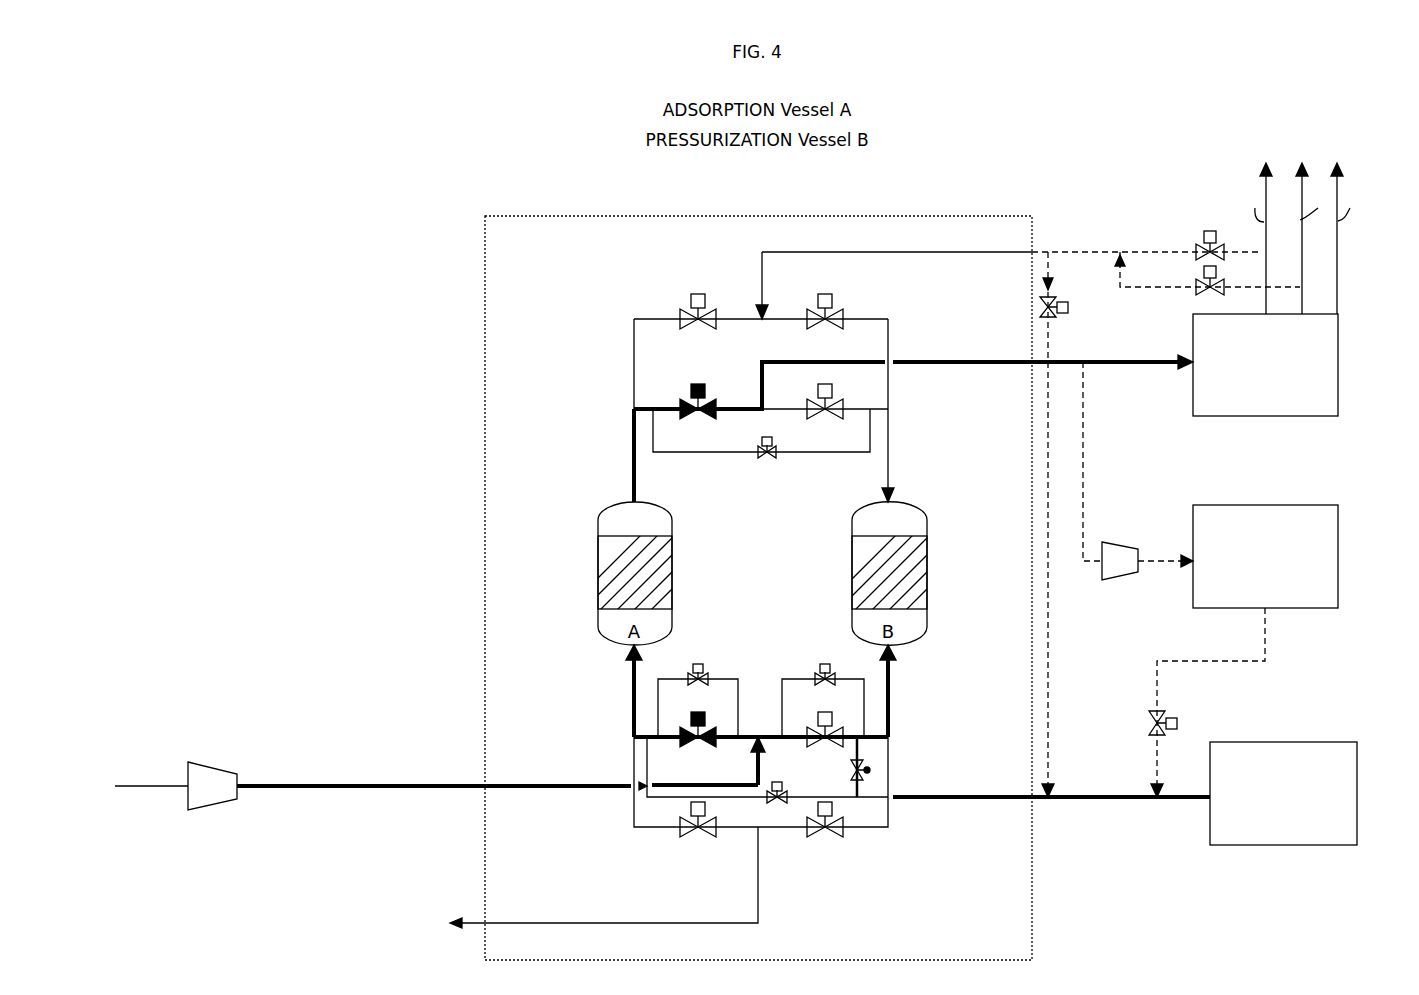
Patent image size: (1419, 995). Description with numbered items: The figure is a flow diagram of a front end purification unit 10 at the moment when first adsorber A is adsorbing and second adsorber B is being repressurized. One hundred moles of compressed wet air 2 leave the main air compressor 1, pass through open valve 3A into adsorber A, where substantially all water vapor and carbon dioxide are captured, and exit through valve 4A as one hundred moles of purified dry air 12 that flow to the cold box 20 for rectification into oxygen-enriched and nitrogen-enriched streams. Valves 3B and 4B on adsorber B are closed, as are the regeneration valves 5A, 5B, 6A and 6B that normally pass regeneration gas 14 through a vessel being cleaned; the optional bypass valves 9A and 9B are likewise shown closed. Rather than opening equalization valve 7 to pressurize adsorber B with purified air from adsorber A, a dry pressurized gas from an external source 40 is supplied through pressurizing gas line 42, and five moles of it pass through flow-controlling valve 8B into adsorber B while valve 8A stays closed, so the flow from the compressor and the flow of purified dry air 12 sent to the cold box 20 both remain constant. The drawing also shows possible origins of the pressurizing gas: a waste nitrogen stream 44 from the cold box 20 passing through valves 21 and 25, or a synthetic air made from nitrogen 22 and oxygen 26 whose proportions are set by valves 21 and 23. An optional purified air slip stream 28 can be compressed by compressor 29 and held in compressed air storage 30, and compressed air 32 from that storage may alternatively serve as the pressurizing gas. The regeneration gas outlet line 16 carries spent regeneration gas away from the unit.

The main air compressor 1 is at (212, 763).
The compressed wet air 2 is at (568, 788).
The valve 3A is at (698, 710).
The valve 3B is at (828, 711).
The valve 4A is at (696, 386).
The valve 4B is at (828, 390).
The valve 5A is at (696, 296).
The valve 5B is at (828, 295).
The valve 6A is at (703, 810).
The valve 6B is at (831, 810).
The valve 7 is at (770, 458).
The valve 8A is at (778, 782).
The valve 8B is at (850, 777).
The bypass valve 9A is at (696, 669).
The bypass valve 9B is at (827, 670).
The front end purification unit 10 is at (478, 357).
The purified dry air 12 is at (632, 470).
The regeneration gas 14 is at (768, 251).
The regeneration gas outlet line 16 is at (650, 922).
The cold box 20 is at (1339, 382).
The valve 21 is at (1209, 231).
The nitrogen 22 is at (1188, 251).
The valve 23 is at (1216, 272).
The valve 25 is at (1070, 310).
The oxygen 26 is at (1180, 288).
The purified air slip stream 28 is at (1180, 560).
The compressor 29 is at (1120, 580).
The compressed air storage 30 is at (1339, 551).
The compressed air 32 is at (1200, 660).
The external source 40 is at (1358, 800).
The pressurizing gas line 42 is at (1010, 796).
The stream 44 is at (1049, 640).